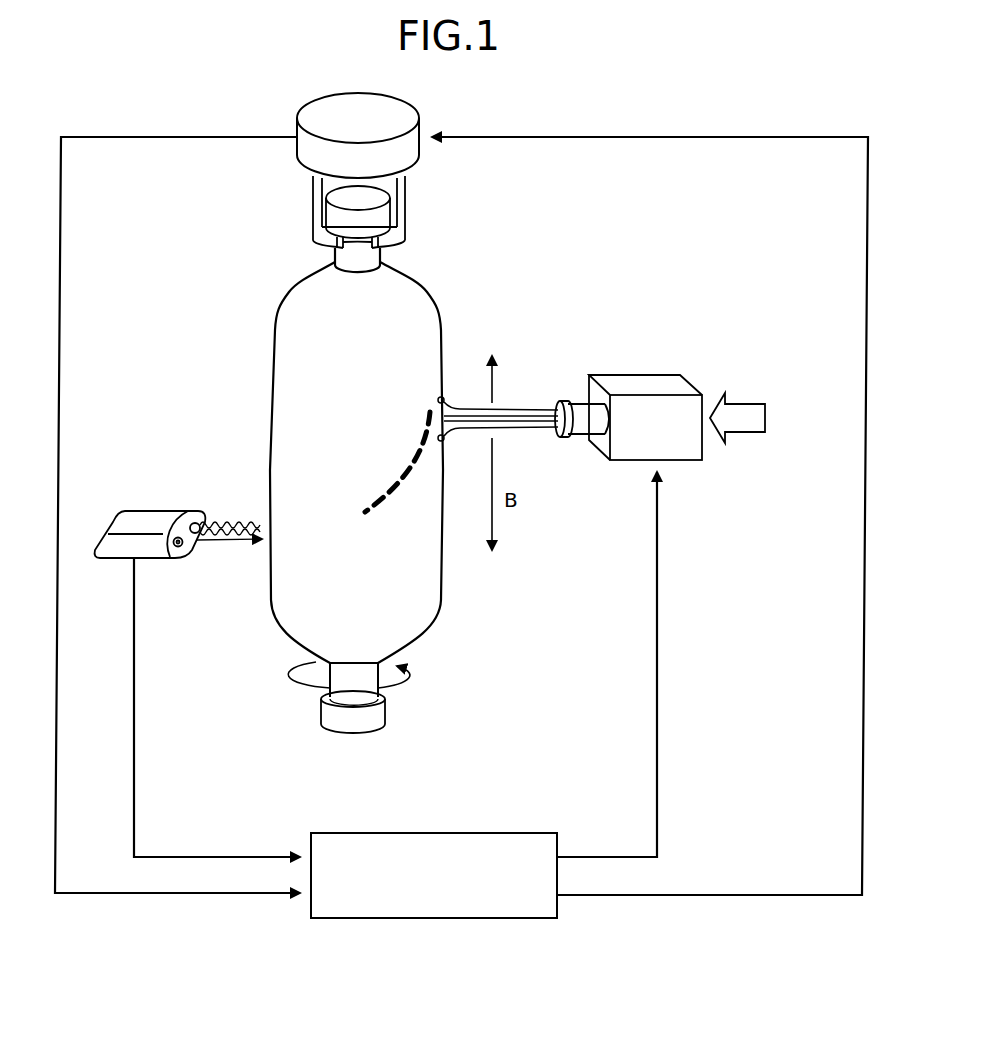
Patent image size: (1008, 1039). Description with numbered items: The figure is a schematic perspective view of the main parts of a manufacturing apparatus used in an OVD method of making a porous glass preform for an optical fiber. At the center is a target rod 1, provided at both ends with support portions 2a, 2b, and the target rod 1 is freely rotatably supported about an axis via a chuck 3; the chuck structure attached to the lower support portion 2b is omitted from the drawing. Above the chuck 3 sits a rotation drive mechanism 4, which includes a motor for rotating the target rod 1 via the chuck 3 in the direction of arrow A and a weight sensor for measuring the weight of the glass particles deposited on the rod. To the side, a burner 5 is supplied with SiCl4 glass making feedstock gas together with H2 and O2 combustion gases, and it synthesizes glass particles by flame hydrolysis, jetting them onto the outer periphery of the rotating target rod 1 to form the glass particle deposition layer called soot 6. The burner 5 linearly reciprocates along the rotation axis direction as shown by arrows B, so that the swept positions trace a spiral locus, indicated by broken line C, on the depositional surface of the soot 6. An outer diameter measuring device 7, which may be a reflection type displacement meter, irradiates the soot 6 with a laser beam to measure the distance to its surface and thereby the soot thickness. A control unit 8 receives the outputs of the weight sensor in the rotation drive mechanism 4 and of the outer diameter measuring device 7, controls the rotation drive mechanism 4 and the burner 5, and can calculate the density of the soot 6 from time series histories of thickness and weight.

The target rod 1 is at (356, 674).
The support portion 2a is at (330, 217).
The support portion 2b is at (360, 725).
The chuck 3 is at (400, 237).
The rotation drive mechanism 4 is at (395, 118).
The burner 5 is at (640, 382).
The soot 6 is at (289, 332).
The outer diameter measuring device 7 is at (150, 521).
The control unit 8 is at (438, 826).